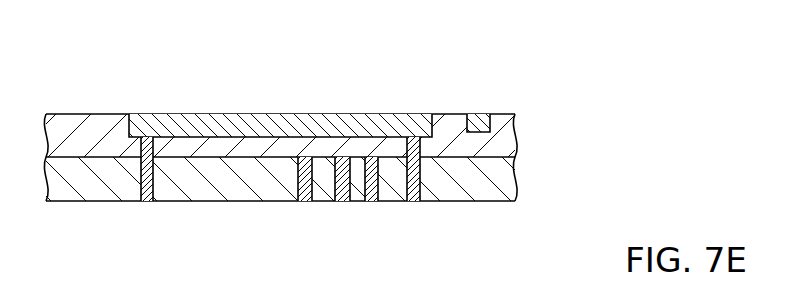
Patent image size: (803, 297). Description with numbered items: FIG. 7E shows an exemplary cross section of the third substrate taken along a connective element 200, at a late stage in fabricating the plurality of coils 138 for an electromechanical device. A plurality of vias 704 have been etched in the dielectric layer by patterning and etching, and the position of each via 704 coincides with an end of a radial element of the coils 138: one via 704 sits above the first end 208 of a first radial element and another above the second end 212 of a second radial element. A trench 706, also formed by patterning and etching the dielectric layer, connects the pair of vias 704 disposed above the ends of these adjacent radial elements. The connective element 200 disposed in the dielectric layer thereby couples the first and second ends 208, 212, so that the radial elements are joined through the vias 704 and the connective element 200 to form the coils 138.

The via 704 is at (100, 116).
The connective element 200 is at (296, 91).
The trench 706 is at (494, 114).
The second end of second radial element 212 is at (147, 203).
The first end of first radial element 208 is at (412, 203).
The plurality of coils 138 is at (303, 203).